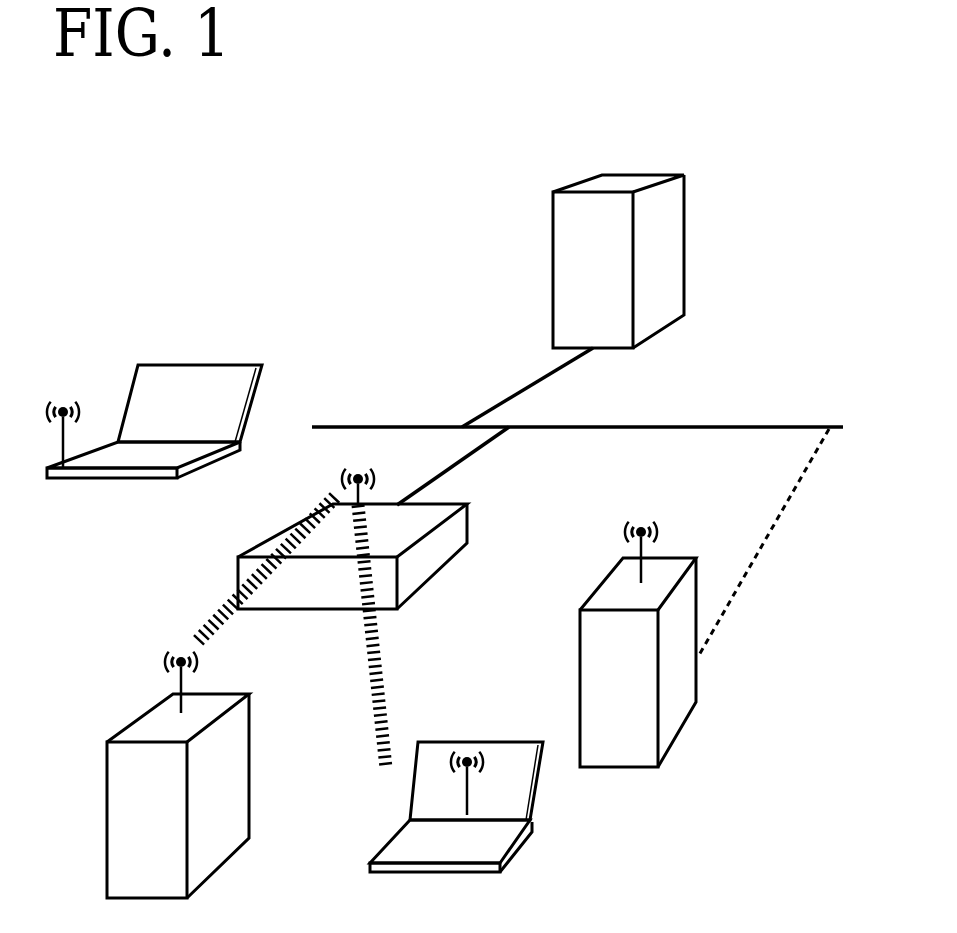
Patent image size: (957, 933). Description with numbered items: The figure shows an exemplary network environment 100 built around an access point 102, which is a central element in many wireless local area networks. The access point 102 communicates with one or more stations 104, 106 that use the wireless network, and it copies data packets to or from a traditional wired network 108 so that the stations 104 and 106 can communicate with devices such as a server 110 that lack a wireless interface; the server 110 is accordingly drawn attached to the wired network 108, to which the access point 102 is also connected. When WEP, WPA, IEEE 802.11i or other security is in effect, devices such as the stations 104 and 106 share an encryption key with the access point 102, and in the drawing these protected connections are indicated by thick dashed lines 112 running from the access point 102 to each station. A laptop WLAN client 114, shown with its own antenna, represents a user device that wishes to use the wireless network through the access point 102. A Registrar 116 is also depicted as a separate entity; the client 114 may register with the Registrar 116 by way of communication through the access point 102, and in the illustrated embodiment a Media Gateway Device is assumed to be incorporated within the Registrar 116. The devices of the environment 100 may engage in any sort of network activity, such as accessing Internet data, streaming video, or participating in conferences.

The environment 100 is at (773, 104).
The access point 102 is at (353, 541).
The station 104 is at (178, 782).
The station 106 is at (456, 822).
The wired network 108 is at (577, 426).
The server 110 is at (630, 263).
The thick dashed lines 112 is at (367, 695).
The laptop WLAN client 114 is at (152, 437).
The Registrar 116 is at (704, 602).